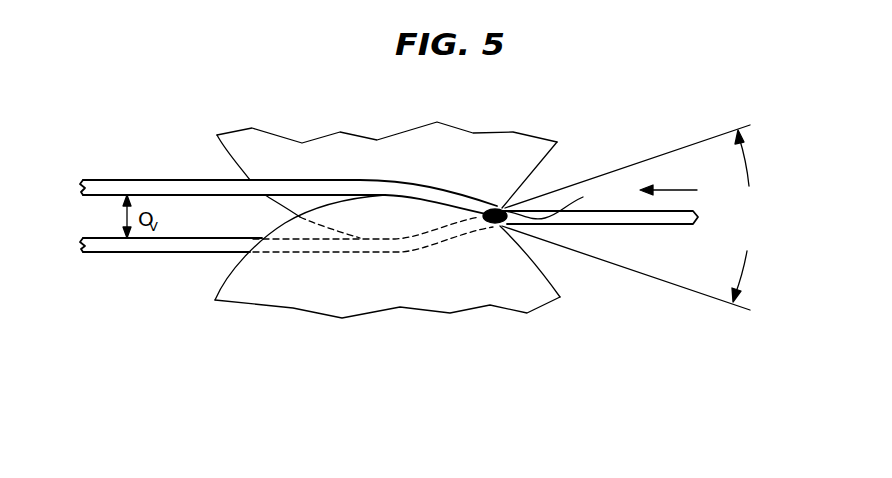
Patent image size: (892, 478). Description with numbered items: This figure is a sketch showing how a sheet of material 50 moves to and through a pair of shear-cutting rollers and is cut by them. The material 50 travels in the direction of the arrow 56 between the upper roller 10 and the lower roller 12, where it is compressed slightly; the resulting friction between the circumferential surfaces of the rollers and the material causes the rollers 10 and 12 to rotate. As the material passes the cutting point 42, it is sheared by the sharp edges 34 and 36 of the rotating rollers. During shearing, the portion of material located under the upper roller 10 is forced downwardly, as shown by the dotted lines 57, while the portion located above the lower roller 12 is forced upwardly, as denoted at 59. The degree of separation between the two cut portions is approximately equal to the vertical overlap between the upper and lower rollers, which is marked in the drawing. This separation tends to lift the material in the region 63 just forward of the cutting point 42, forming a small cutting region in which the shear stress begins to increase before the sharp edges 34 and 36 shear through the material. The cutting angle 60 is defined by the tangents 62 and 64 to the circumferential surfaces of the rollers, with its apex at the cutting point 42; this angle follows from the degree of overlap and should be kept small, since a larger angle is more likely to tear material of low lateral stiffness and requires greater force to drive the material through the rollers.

The upper roller 10 is at (430, 164).
The lower roller 12 is at (283, 299).
The sharp edge of upper roller 34 is at (547, 155).
The sharp edge of lower roller 36 is at (521, 250).
The cutting point 42 is at (486, 207).
The sheet of material 50 is at (648, 225).
The arrow indicating direction of material movement 56 is at (678, 190).
The dotted lines showing downwardly forced material portion 57 is at (340, 254).
The upwardly forced material portion 59 is at (279, 180).
The cutting angle 60 is at (748, 256).
The tangent to circumferential surface of upper roller 62 is at (673, 150).
The lifted material region forward of cutting point 63 is at (560, 202).
The tangent to circumferential surface of lower roller 64 is at (640, 272).